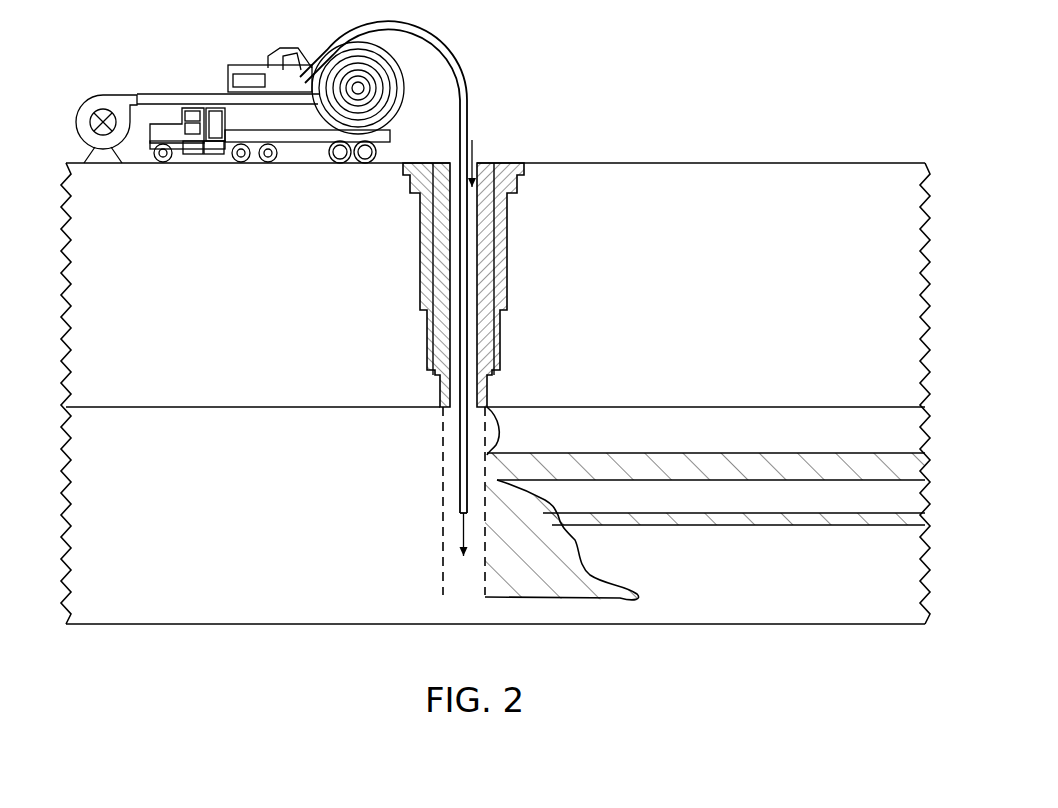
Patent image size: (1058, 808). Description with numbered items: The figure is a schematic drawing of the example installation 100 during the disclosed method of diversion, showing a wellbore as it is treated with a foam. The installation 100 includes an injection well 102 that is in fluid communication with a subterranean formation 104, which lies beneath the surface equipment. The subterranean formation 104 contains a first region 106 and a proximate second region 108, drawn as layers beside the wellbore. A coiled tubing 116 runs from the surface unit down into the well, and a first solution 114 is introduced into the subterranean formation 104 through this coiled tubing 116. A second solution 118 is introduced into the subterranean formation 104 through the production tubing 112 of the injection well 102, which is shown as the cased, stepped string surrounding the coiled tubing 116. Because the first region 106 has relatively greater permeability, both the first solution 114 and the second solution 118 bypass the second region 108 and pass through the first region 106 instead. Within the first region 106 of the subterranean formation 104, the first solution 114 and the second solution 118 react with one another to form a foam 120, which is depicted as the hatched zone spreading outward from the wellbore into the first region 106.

The installation 100 is at (495, 332).
The injection well 102 is at (340, 101).
The subterranean formation 104 is at (706, 589).
The first region 106 is at (840, 468).
The second region 108 is at (903, 498).
The production tubing 112 is at (502, 259).
The first solution 114 is at (460, 533).
The coiled tubing 116 is at (458, 64).
The second solution 118 is at (476, 150).
The foam 120 is at (550, 566).